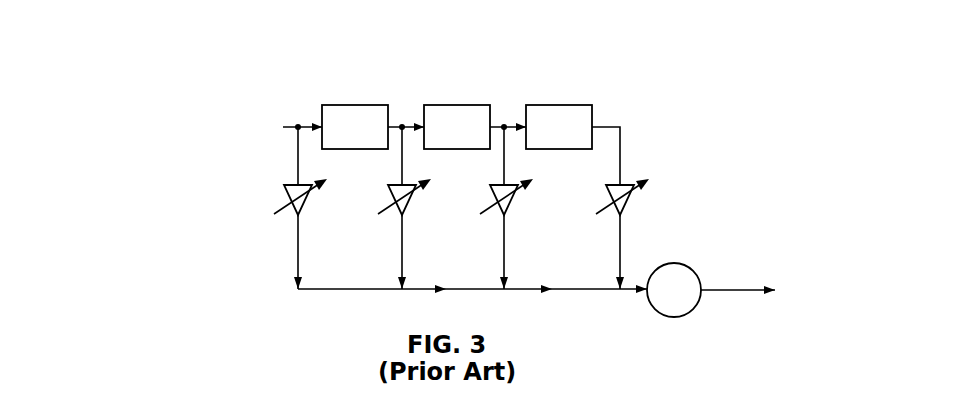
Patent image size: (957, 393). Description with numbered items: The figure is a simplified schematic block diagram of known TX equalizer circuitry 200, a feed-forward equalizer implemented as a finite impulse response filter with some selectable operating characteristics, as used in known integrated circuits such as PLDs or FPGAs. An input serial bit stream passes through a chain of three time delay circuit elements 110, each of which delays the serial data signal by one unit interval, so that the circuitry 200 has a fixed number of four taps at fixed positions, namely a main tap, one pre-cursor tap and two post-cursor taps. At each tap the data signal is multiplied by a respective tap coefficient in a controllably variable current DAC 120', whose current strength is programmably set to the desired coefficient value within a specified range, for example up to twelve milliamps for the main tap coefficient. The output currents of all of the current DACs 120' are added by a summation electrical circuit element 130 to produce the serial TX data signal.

The TX equalizer circuitry 200 is at (168, 38).
The time delay circuit element 110 is at (349, 104).
The current DAC 120' is at (483, 192).
The summation electrical circuit element 130 is at (674, 263).